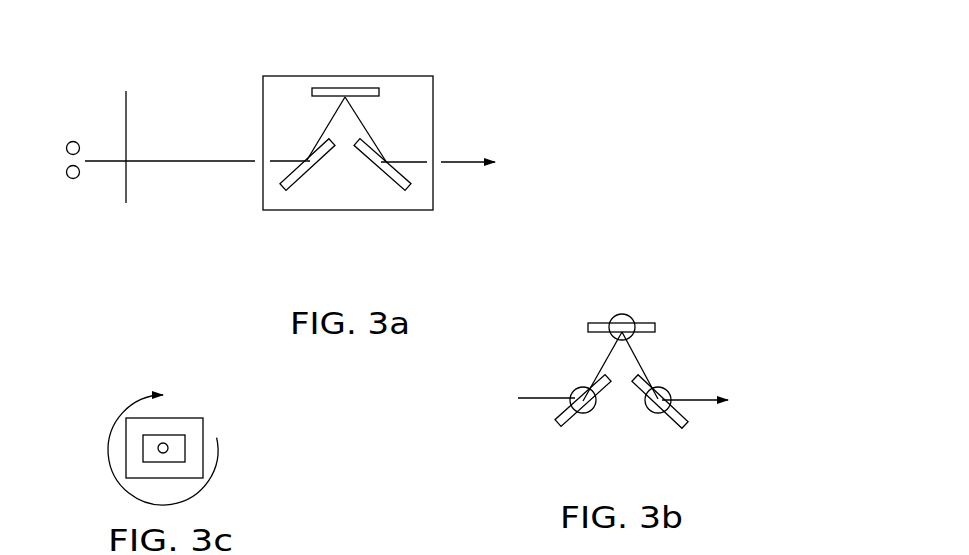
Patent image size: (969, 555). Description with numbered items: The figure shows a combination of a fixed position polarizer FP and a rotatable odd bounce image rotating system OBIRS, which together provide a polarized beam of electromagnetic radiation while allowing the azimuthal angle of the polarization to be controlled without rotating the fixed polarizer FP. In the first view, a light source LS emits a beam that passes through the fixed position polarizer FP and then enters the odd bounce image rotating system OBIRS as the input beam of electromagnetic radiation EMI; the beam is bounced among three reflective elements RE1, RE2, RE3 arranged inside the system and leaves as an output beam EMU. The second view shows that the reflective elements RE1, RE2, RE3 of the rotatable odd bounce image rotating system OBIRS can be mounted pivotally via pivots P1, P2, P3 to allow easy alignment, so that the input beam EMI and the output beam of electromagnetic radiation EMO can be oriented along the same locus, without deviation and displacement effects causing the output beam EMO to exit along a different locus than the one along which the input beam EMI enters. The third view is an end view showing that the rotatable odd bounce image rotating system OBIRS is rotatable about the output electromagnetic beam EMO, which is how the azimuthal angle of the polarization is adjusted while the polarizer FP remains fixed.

In FIG. 3A, the light source LS is at (72, 186).
In FIG. 3A, the fixed position polarizer FP is at (132, 96).
In FIG. 3A, the input beam of electromagnetic radiation EMI is at (202, 169).
In FIG. 3B, the input beam of electromagnetic radiation EMI is at (547, 393).
In FIG. 3A, the electromagnetic radiation output (unrotated) EMU is at (458, 172).
In FIG. 3B, the output beam of electromagnetic radiation EMO is at (695, 390).
In FIG. 3C, the output beam of electromagnetic radiation EMO is at (158, 441).
In FIG. 3A, the rotatable odd bounce image rotating system OBIRS is at (488, 62).
In FIG. 3B, the rotatable odd bounce image rotating system OBIRS is at (709, 301).
In FIG. 3C, the rotatable odd bounce image rotating system OBIRS is at (231, 402).
In FIG. 3A, the reflective element RE1 is at (292, 196).
In FIG. 3B, the reflective element RE1 is at (574, 421).
In FIG. 3A, the reflective element RE2 is at (352, 84).
In FIG. 3B, the reflective element RE2 is at (616, 312).
In FIG. 3A, the reflective element RE3 is at (399, 193).
In FIG. 3B, the reflective element RE3 is at (668, 426).
In FIG. 3B, the pivot P1 is at (591, 408).
In FIG. 3B, the pivot P2 is at (664, 388).
In FIG. 3B, the pivot P3 is at (631, 317).